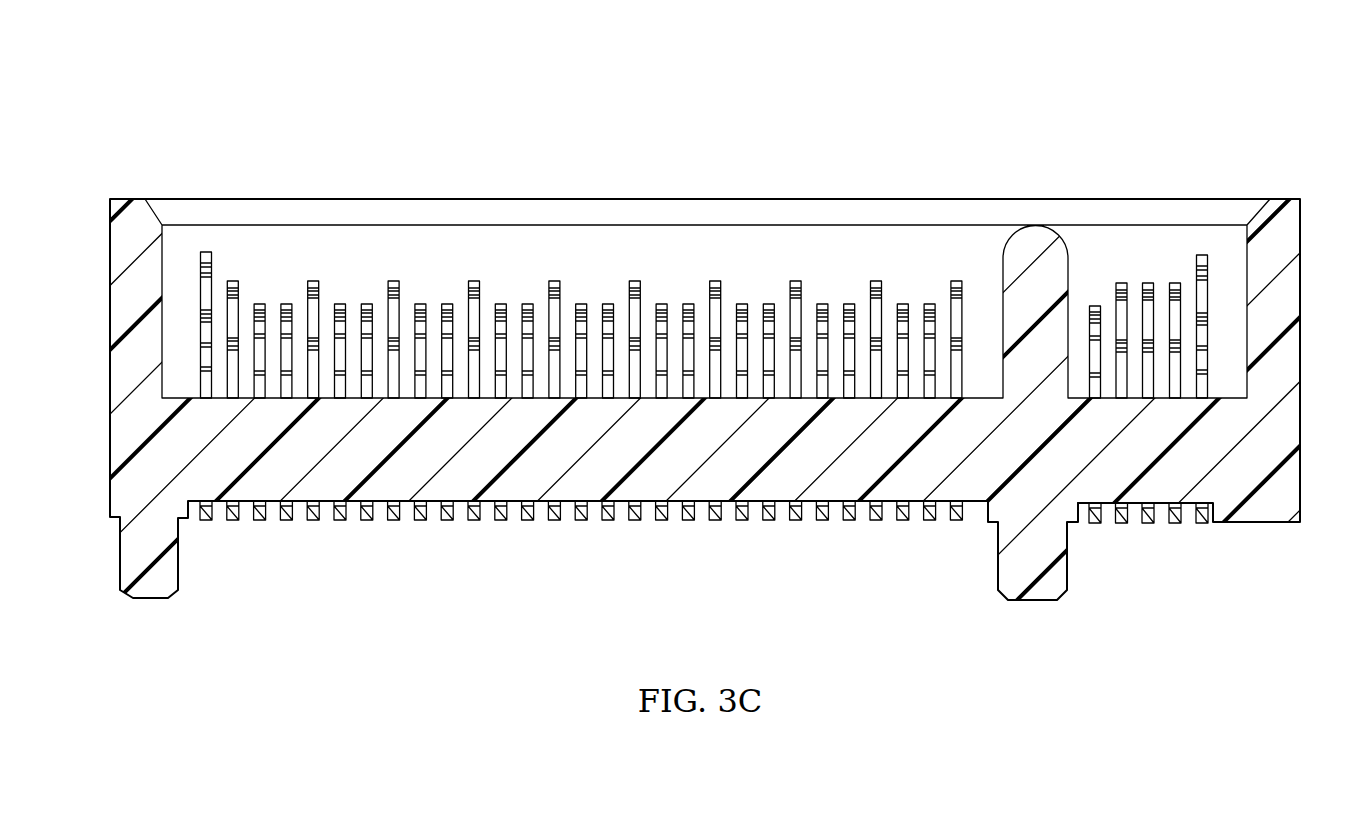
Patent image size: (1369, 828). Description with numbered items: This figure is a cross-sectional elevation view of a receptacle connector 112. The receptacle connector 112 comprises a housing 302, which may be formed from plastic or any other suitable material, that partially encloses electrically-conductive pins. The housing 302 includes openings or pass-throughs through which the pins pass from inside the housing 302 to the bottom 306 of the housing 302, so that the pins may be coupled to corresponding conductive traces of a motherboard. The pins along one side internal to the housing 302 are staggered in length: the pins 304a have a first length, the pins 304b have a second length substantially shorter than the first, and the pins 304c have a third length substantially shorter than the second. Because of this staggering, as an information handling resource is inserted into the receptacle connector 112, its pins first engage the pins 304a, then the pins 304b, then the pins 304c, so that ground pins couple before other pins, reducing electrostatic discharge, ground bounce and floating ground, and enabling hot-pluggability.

The receptacle connector 112 is at (1279, 113).
The housing 302 is at (674, 495).
The pins 304a is at (206, 252).
The pins 304b is at (233, 281).
The pins 304c is at (286, 304).
The bottom 306 is at (1030, 601).